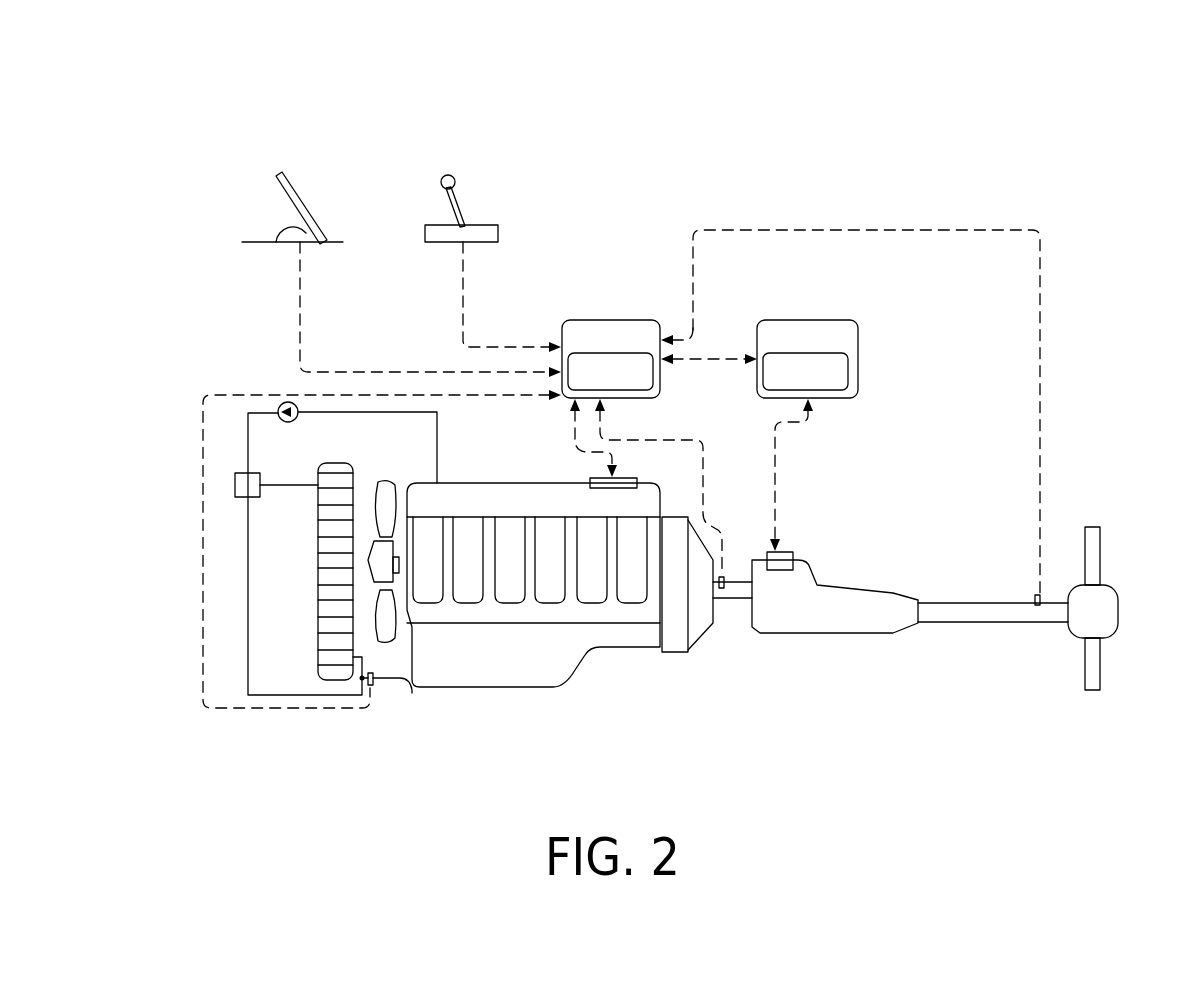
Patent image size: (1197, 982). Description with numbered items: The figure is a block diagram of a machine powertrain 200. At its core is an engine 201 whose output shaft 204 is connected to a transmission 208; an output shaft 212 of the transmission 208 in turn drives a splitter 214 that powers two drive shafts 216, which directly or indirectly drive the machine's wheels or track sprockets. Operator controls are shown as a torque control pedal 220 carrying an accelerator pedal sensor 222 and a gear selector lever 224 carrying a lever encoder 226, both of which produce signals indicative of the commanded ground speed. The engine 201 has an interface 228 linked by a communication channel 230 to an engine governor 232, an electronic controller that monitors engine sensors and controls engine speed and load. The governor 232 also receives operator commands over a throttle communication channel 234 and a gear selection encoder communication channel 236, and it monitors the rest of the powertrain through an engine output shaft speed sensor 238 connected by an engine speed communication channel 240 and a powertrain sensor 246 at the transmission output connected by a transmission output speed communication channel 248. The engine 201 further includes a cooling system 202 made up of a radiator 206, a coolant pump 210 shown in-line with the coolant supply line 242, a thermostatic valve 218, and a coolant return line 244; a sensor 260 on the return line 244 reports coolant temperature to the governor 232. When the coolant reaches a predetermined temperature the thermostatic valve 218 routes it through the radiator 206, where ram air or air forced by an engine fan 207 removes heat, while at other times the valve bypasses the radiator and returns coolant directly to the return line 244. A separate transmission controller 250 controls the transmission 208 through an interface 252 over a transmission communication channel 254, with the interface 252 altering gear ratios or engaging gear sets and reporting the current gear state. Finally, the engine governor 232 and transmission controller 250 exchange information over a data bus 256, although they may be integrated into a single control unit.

The powertrain 200 is at (818, 170).
The engine 201 is at (430, 497).
The cooling system 202 is at (170, 542).
The output shaft 204 is at (720, 598).
The radiator 206 is at (323, 562).
The engine fan 207 is at (358, 586).
The transmission 208 is at (848, 600).
The coolant pump 210 is at (288, 422).
The output shaft 212 is at (935, 608).
The splitter 214 is at (1095, 608).
The drive shafts 216 is at (1102, 535).
The thermostatic valve 218 is at (257, 490).
The torque control pedal 220 is at (287, 180).
The accelerator pedal sensor 222 is at (278, 223).
The gear selector lever 224 is at (448, 173).
The lever encoder 226 is at (482, 243).
The interface 228 is at (597, 480).
The communication channel 230 is at (577, 435).
The engine governor 232 is at (600, 328).
The throttle communication channel 234 is at (298, 302).
The gear selection encoder communication channel 236 is at (462, 280).
The engine output shaft speed sensor 238 is at (713, 583).
The engine speed communication channel 240 is at (703, 492).
The coolant supply line 242 is at (323, 413).
The coolant return line 244 is at (418, 697).
The powertrain sensor 246 is at (1035, 622).
The transmission output speed communication channel 248 is at (893, 227).
The transmission controller 250 is at (835, 342).
The interface 252 is at (788, 558).
The transmission communication channel 254 is at (777, 480).
The data bus 256 is at (693, 360).
The sensor 260 is at (373, 680).